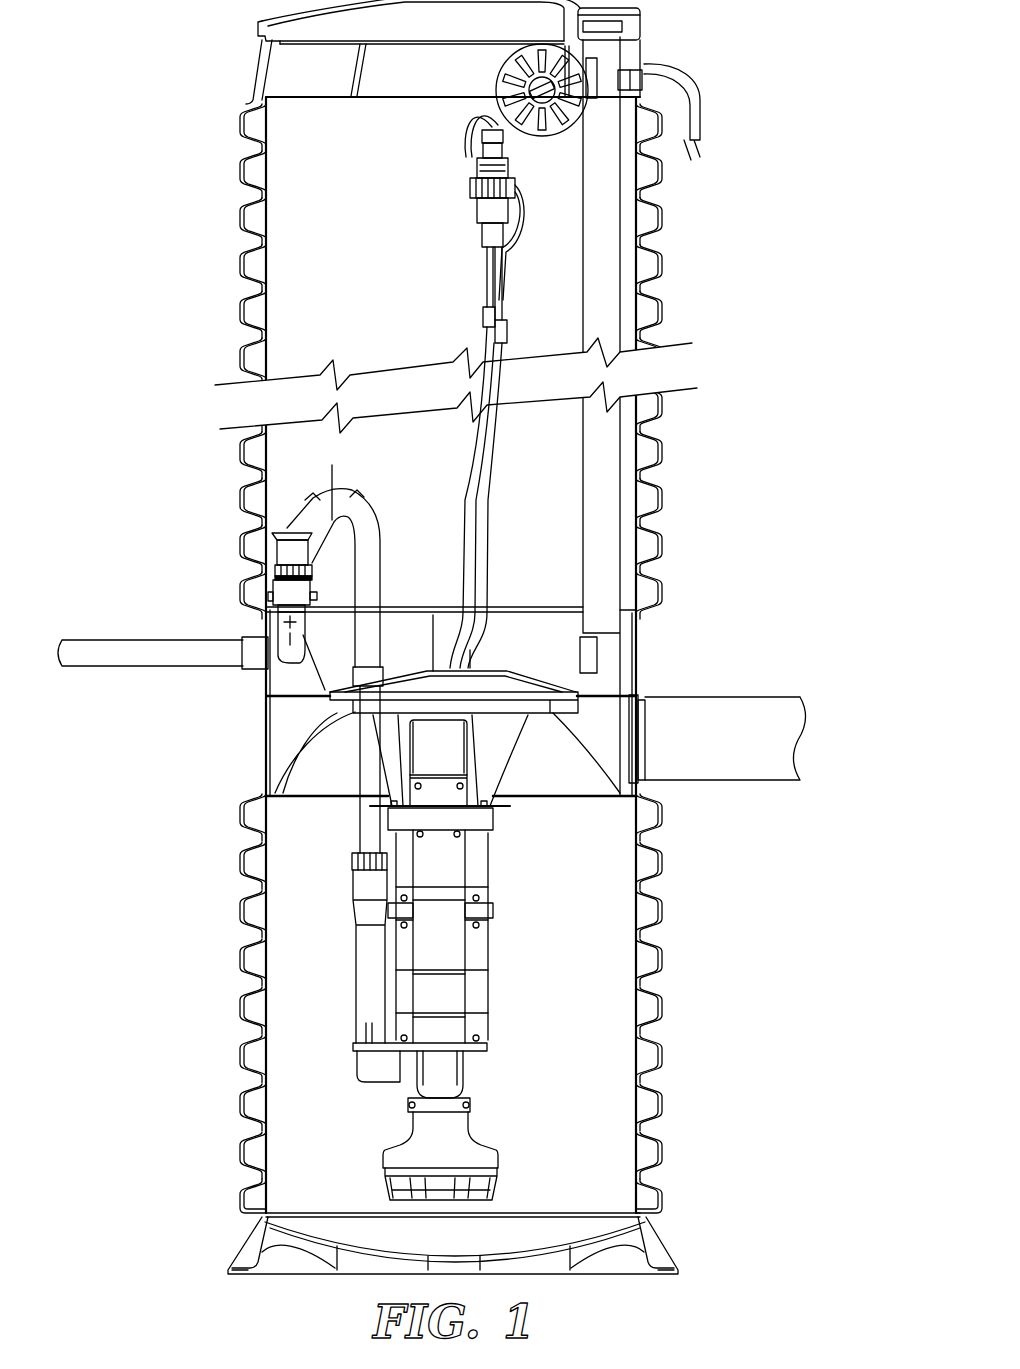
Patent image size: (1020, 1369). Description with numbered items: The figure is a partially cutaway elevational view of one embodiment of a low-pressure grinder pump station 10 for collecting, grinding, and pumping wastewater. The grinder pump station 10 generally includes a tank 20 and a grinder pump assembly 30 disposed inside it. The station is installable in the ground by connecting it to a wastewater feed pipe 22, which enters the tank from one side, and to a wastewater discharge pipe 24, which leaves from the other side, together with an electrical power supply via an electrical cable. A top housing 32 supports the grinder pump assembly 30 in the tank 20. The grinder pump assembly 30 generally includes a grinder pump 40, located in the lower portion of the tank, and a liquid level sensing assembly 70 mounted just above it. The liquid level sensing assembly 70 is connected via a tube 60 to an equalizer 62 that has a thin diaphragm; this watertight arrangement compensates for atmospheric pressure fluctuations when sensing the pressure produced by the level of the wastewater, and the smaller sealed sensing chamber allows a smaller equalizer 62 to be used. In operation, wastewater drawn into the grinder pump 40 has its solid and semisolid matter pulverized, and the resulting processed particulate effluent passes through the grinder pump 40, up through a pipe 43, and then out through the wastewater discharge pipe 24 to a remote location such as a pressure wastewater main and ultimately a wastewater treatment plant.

The grinder pump station 10 is at (126, 108).
The tank 20 is at (690, 545).
The wastewater feed pipe 22 is at (742, 700).
The wastewater discharge pipe 24 is at (105, 637).
The grinder pump assembly 30 is at (320, 1064).
The top housing 32 is at (500, 740).
The grinder pump 40 is at (364, 1145).
The pipe 43 is at (358, 980).
The tube 60 is at (466, 128).
The equalizer 62 is at (548, 134).
The liquid level sensing assembly 70 is at (445, 1080).